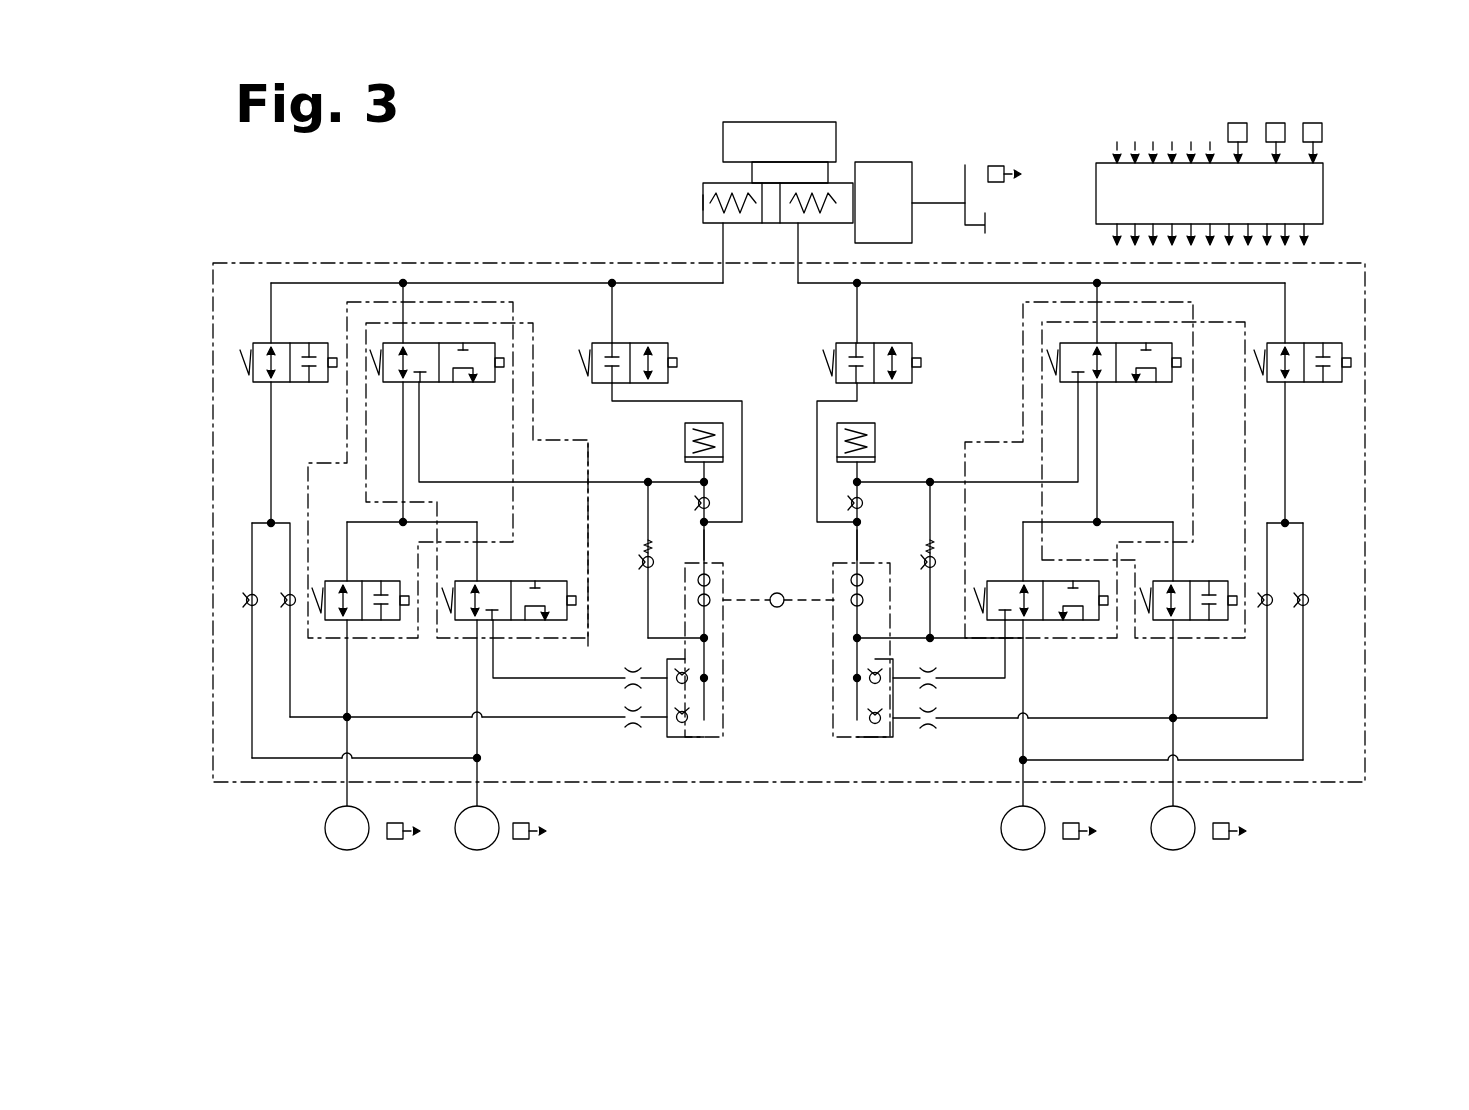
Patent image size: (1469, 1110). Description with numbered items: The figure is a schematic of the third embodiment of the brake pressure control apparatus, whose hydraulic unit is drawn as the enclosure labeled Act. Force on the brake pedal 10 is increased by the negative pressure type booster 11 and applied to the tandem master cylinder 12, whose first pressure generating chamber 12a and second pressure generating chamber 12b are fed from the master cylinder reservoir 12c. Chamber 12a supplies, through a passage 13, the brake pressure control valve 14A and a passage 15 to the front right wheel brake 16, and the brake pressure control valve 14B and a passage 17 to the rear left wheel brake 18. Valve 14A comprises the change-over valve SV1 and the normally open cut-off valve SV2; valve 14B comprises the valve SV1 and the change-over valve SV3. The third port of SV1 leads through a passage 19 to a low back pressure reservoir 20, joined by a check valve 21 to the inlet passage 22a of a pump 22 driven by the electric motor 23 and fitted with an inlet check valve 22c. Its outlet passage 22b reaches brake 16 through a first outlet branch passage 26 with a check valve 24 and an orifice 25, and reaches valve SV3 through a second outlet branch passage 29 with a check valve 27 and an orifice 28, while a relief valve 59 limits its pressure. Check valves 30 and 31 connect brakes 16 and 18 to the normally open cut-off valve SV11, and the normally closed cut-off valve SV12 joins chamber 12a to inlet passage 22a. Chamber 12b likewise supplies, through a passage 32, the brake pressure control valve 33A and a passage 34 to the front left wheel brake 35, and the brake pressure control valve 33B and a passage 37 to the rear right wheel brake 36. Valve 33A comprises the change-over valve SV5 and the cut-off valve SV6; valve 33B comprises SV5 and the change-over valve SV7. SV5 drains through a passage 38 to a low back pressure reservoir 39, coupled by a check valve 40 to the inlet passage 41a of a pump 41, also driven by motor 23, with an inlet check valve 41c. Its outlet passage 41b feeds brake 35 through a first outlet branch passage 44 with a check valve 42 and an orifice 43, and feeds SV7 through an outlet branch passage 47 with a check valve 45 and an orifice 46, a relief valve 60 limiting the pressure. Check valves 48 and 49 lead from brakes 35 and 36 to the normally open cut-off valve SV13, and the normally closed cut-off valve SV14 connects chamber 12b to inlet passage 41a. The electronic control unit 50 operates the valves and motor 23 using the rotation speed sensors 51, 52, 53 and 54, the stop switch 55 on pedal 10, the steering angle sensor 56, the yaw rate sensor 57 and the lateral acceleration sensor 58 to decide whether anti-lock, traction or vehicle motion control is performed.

The brake pedal 10 is at (987, 222).
The negative pressure type booster 11 is at (885, 162).
The tandem master cylinder 12 is at (703, 210).
The first pressure generating chamber 12a is at (780, 223).
The second pressure generating chamber 12b is at (705, 188).
The master cylinder reservoir 12c is at (723, 137).
The passage 13 is at (798, 240).
The brake pressure control valve 14A is at (1245, 322).
The brake pressure control valve 14B is at (1023, 372).
The passage 15 is at (1153, 810).
The front right wheel brake 16 is at (1180, 850).
The passage 17 is at (1003, 810).
The rear left wheel brake 18 is at (1030, 850).
The passage 19 is at (930, 485).
The low back pressure reservoir 20 is at (873, 430).
The check valve 21 is at (863, 503).
The pump 22 is at (843, 740).
The inlet passage 22a is at (852, 575).
The outlet passage 22b is at (855, 642).
The check valve 22c is at (885, 528).
The electric motor 23 is at (778, 593).
The check valve 24 is at (870, 725).
The orifice 25 is at (928, 730).
The first outlet branch passage 26 is at (975, 725).
The check valve 27 is at (895, 668).
The orifice 28 is at (935, 672).
The second outlet branch passage 29 is at (935, 712).
The check valve 30 is at (1310, 600).
The check valve 31 is at (1310, 602).
The passage 32 is at (723, 252).
The brake pressure control valve 33A is at (347, 395).
The brake pressure control valve 33B is at (520, 350).
The passage 34 is at (328, 812).
The front left wheel brake 35 is at (342, 850).
The rear right wheel brake 36 is at (465, 850).
The passage 37 is at (492, 848).
The passage 38 is at (588, 482).
The low back pressure reservoir 39 is at (685, 440).
The check valve 40 is at (710, 502).
The pump 41 is at (716, 740).
The inlet passage 41a is at (708, 545).
The outlet passage 41b is at (706, 700).
The check valve 41c is at (698, 582).
The check valve 42 is at (680, 725).
The orifice 43 is at (628, 725).
The first outlet branch passage 44 is at (525, 718).
The check valve 45 is at (678, 685).
The orifice 46 is at (630, 670).
The outlet branch passage 47 is at (498, 675).
The check valve 48 is at (285, 595).
The check valve 49 is at (247, 603).
The electronic control unit 50 is at (1096, 180).
The rotation speed sensor 51 is at (1222, 840).
The rotation speed sensor 52 is at (1072, 840).
The rotation speed sensor 53 is at (398, 840).
The rotation speed sensor 54 is at (525, 840).
The stop switch 55 is at (995, 165).
The steering angle sensor 56 is at (1237, 123).
The yaw rate sensor 57 is at (1275, 123).
The lateral acceleration sensor 58 is at (1312, 123).
The relief valve 59 is at (936, 555).
The relief valve 60 is at (645, 560).
The electromagnetic change-over valve SV1 is at (1137, 382).
The normally open electromagnetic cut-off valve SV2 is at (1203, 620).
The electromagnetic change-over valve SV3 is at (1020, 581).
The electromagnetic change-over valve SV5 is at (460, 382).
The normally open electromagnetic cut-off valve SV6 is at (375, 581).
The electromagnetic change-over valve SV7 is at (545, 581).
The normally open electromagnetic cut-off valve SV11 is at (1320, 343).
The normally closed electromagnetic cut-off valve SV12 is at (900, 343).
The normally open electromagnetic cut-off valve SV13 is at (303, 343).
The normally closed electromagnetic cut-off valve SV14 is at (655, 343).
The hydraulic actuator unit Act is at (752, 792).